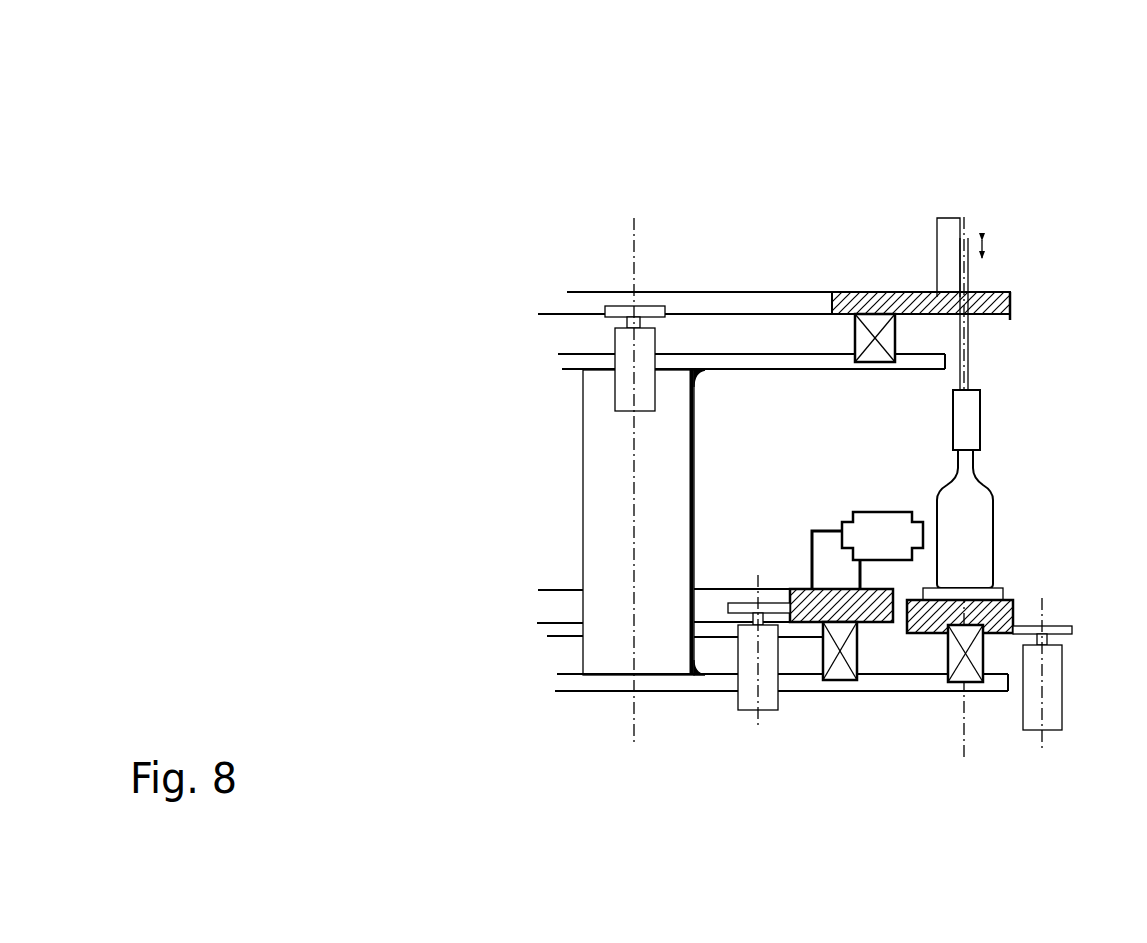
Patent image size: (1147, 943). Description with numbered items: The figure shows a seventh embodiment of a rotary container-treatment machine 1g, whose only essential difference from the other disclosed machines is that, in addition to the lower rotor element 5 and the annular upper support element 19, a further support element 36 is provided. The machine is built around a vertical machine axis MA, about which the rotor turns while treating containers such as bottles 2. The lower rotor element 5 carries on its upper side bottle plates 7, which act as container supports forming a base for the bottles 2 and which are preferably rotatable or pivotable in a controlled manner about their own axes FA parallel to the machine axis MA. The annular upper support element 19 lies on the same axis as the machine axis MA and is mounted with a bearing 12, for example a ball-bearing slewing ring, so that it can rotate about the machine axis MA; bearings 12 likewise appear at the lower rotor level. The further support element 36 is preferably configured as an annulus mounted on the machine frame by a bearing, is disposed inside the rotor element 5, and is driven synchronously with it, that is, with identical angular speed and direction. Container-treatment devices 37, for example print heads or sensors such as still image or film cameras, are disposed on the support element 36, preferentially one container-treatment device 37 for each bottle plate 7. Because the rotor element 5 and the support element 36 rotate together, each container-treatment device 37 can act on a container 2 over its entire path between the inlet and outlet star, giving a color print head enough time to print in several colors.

The container-treatment machine 1g is at (380, 280).
The machine axis MA is at (628, 233).
The bottle plate axis FA is at (969, 220).
The annular upper support element 19 is at (1022, 298).
The bottle 2 is at (1002, 487).
The bottle plate 7 is at (998, 590).
The lower rotor element 5 is at (925, 632).
The further support element 36 is at (803, 588).
The container-treatment device 37 is at (868, 532).
The bearing 12 is at (837, 670).